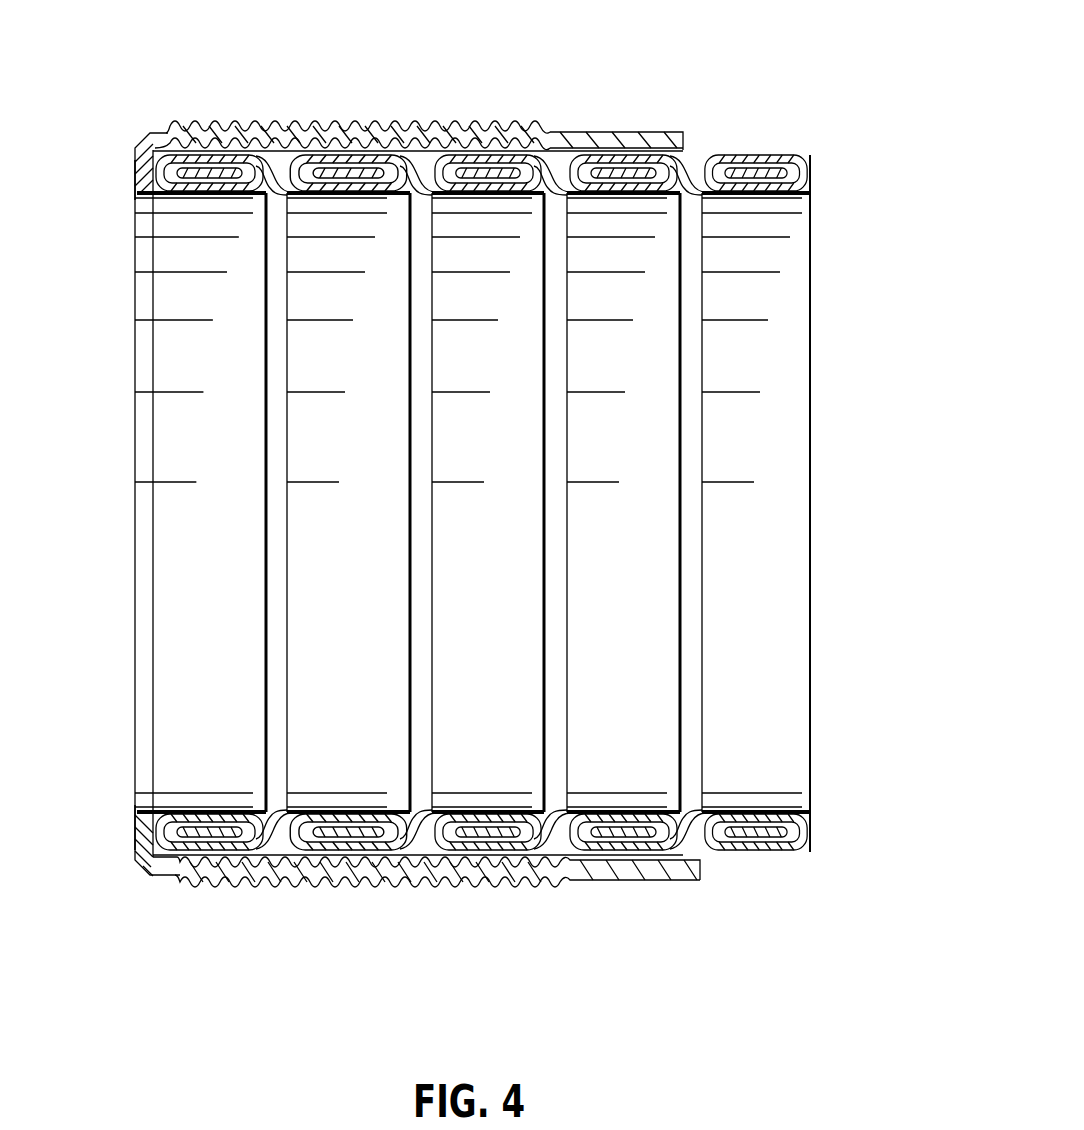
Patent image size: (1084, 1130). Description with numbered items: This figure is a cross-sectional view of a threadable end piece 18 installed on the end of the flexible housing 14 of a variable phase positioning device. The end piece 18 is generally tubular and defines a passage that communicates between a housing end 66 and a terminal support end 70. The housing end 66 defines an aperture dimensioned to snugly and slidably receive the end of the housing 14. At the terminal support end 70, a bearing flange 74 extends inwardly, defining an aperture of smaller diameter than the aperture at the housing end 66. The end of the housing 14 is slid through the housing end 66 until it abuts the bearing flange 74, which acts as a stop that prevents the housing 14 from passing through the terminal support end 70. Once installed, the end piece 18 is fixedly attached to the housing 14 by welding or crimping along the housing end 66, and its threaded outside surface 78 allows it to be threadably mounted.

The housing 14 is at (810, 282).
The end piece 18 is at (364, 115).
The housing end 66 is at (683, 132).
The terminal support end 70 is at (140, 133).
The bearing flange 74 is at (137, 172).
The threaded outside surface 78 is at (385, 888).